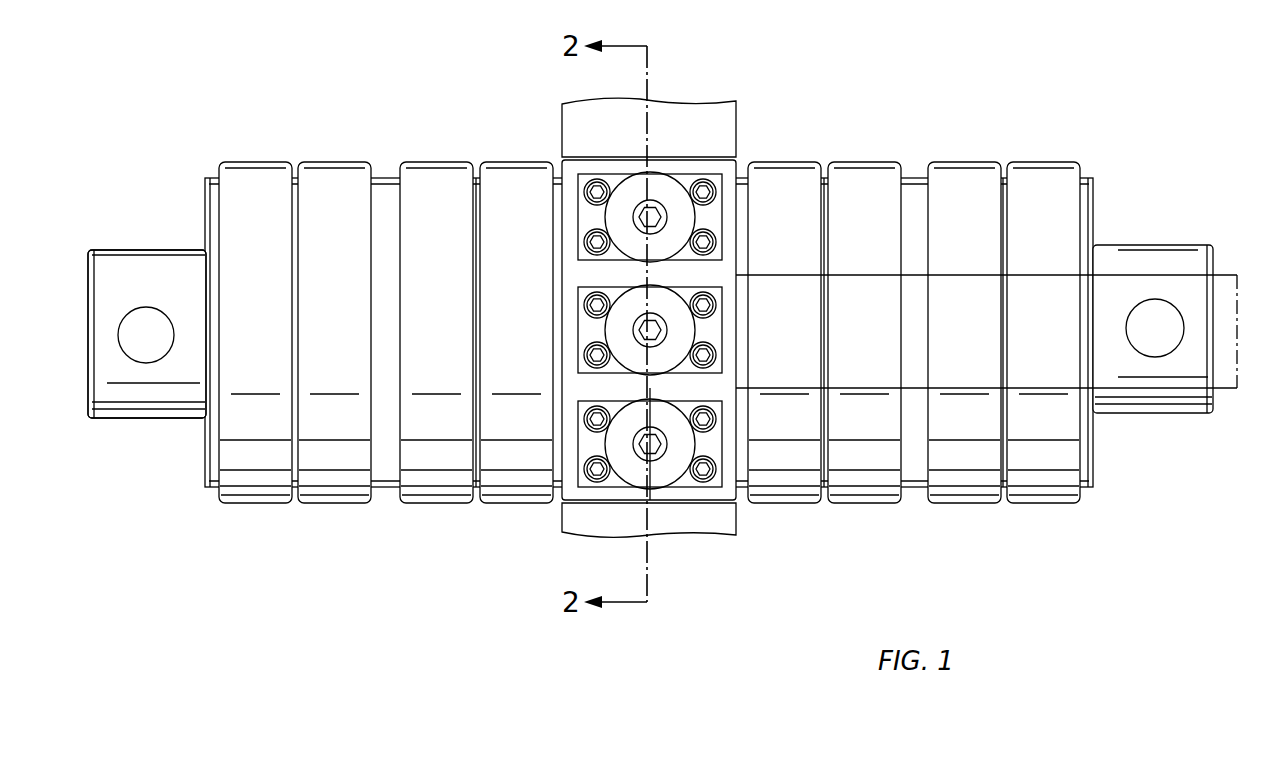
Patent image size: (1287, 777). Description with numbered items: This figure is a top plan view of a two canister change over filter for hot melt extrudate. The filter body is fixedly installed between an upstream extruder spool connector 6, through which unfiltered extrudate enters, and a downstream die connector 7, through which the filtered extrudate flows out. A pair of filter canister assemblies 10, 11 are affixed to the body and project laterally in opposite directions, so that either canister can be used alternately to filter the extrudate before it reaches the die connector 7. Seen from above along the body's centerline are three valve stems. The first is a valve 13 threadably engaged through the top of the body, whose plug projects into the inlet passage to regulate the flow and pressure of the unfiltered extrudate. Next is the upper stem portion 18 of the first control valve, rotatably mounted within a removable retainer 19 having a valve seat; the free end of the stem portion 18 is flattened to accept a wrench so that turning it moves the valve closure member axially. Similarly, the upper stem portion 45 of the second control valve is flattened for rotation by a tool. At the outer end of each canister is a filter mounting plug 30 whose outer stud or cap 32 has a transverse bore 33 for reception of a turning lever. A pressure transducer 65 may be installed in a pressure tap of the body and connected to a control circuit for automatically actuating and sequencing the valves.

The upstream extruder spool connector 6 is at (725, 122).
The downstream die connector 7 is at (727, 523).
The filter canister assembly 10 is at (913, 160).
The filter canister assembly 11 is at (387, 160).
The valve 13 is at (640, 215).
The upper stem portion 18 is at (646, 326).
The removable retainer 19 is at (690, 325).
The filter mounting plug 30 is at (122, 307).
The outer stud or cap 32 is at (120, 265).
The transverse bore 33 is at (130, 332).
The upper stem portion 45 is at (643, 440).
The pressure transducer 65 is at (640, 275).